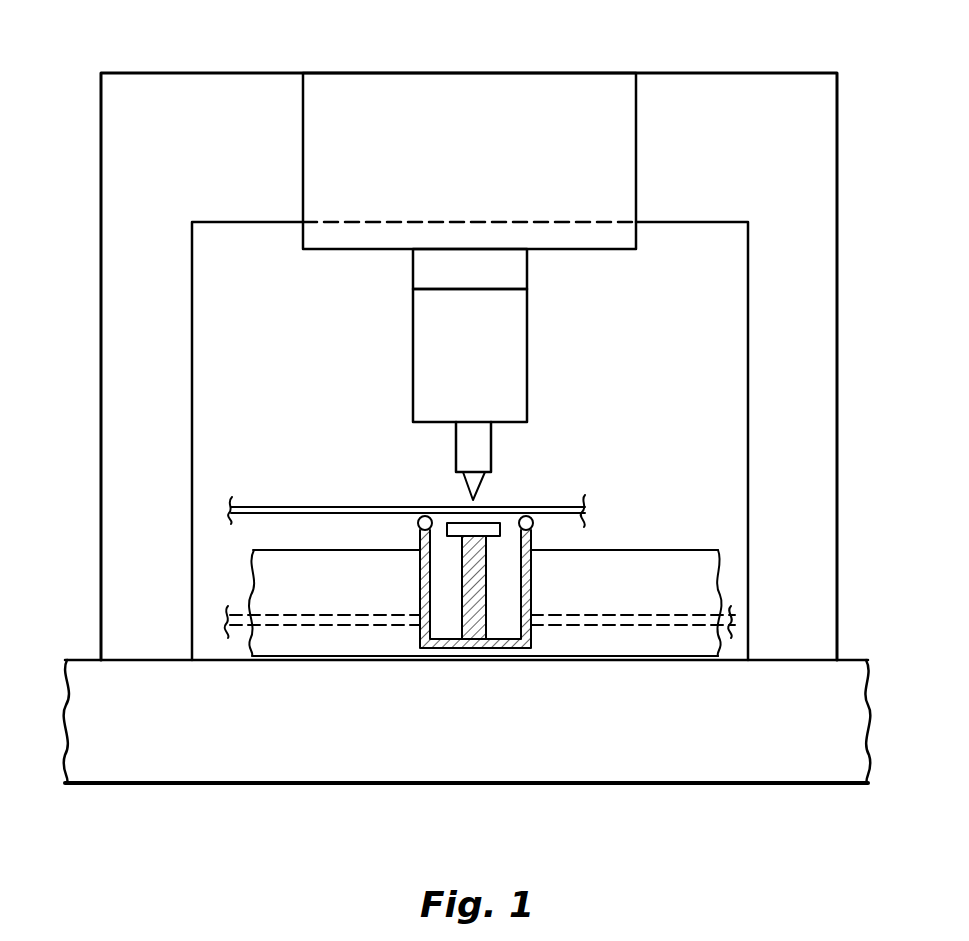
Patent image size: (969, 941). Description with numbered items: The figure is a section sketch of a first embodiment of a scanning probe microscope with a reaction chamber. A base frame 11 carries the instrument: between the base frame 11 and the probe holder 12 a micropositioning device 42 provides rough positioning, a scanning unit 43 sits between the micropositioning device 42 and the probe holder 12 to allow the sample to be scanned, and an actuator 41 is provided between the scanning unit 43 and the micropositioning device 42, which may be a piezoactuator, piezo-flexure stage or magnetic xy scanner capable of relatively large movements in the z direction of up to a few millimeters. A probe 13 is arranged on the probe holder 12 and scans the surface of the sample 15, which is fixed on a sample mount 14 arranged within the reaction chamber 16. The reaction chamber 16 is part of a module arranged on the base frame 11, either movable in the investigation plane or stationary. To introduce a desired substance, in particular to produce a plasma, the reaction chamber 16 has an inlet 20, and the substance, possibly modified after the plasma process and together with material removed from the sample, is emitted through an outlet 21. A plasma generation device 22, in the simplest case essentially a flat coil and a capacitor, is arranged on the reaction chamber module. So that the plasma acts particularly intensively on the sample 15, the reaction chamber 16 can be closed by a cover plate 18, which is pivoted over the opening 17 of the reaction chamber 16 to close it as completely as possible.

The base frame 11 is at (728, 97).
The micropositioning device 42 is at (408, 98).
The actuator 41 is at (507, 272).
The scanning unit 43 is at (442, 366).
The probe holder 12 is at (478, 455).
The probe 13 is at (474, 481).
The cover plate 18 is at (299, 508).
The opening 17 is at (447, 522).
The sample 15 is at (495, 528).
The sample mount 14 is at (470, 567).
The reaction chamber 16 is at (531, 591).
The plasma generation device 22 is at (378, 595).
The outlet 21 is at (413, 620).
The inlet 20 is at (531, 620).